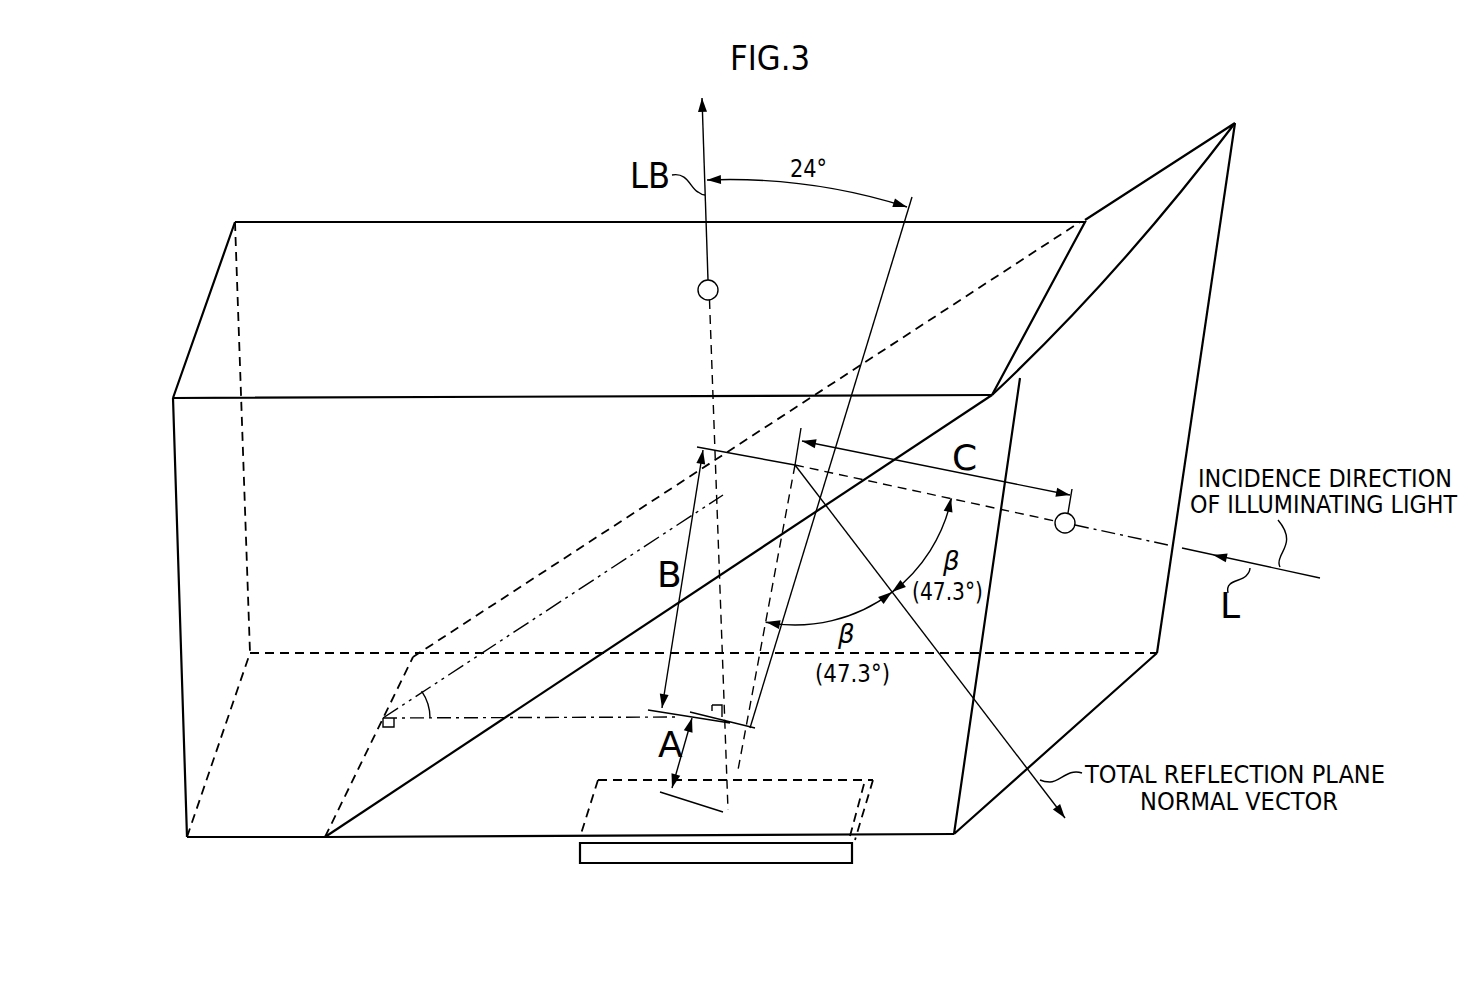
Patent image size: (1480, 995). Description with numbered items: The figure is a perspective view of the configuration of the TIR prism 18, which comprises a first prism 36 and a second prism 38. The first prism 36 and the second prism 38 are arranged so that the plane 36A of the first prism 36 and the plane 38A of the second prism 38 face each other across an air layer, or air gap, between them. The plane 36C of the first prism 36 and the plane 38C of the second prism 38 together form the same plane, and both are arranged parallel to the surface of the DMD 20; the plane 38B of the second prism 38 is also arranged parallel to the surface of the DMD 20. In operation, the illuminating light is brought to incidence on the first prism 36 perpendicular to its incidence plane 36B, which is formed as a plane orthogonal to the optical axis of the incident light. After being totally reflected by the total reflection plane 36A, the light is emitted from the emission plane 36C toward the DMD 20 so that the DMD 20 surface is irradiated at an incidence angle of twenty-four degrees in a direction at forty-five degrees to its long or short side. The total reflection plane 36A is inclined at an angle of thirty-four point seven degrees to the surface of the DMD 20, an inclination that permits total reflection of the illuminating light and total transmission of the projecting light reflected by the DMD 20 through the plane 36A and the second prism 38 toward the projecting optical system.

The TIR prism 18 is at (280, 170).
The DMD 20 is at (768, 853).
The first prism 36 is at (978, 790).
The total reflection plane 36A is at (950, 415).
The incidence plane 36B is at (1207, 313).
The emission plane 36C is at (470, 837).
The second prism 38 is at (238, 292).
The plane of the second prism 38A is at (416, 776).
The plane of the second prism 38B is at (430, 243).
The plane of the second prism 38C is at (278, 838).